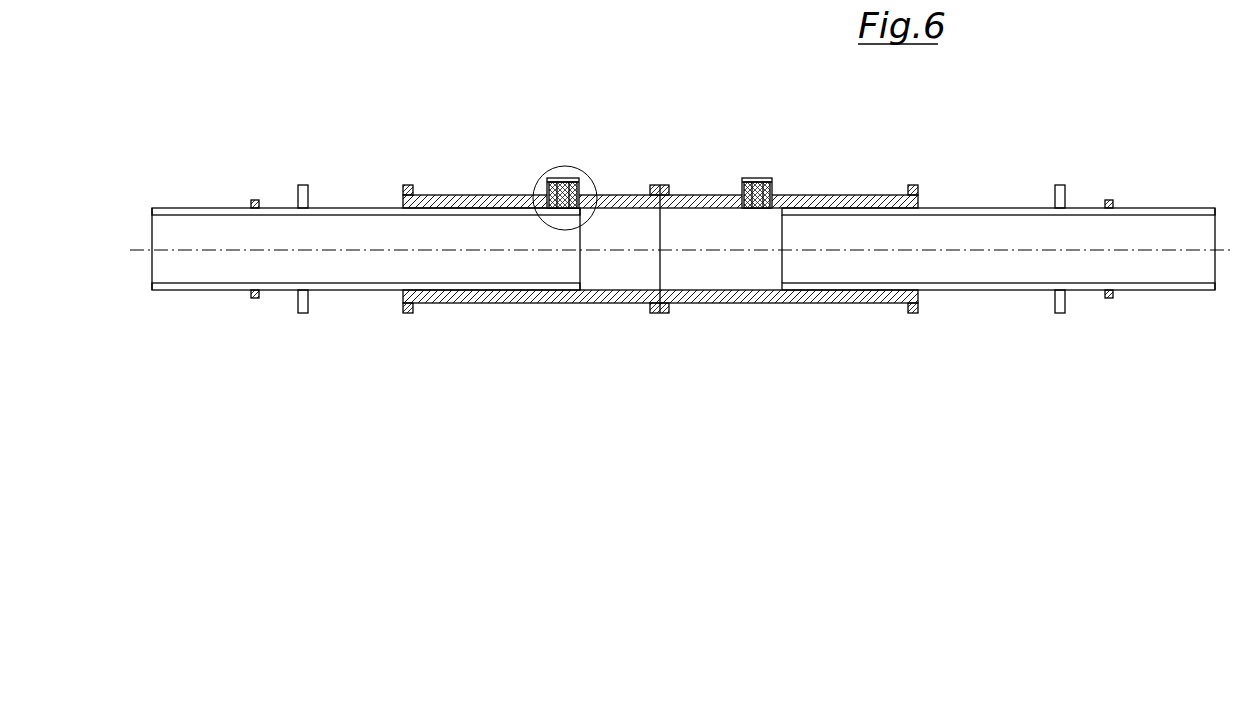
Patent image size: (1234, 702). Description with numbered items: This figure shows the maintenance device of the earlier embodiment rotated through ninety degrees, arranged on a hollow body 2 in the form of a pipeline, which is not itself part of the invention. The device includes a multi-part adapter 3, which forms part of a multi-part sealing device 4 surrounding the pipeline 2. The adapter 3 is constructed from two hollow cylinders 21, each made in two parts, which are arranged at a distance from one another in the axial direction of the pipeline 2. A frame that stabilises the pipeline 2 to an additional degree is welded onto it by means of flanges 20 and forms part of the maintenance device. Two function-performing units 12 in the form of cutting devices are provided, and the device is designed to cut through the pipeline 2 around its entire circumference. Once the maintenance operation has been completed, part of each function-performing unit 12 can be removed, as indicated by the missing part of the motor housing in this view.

The hollow body 2 is at (193, 207).
The adapter 3 is at (961, 200).
The sealing device 4 is at (697, 176).
The function-performing unit 12 is at (555, 166).
The flanges 20 is at (255, 200).
The hollow cylinders 21 is at (1030, 207).